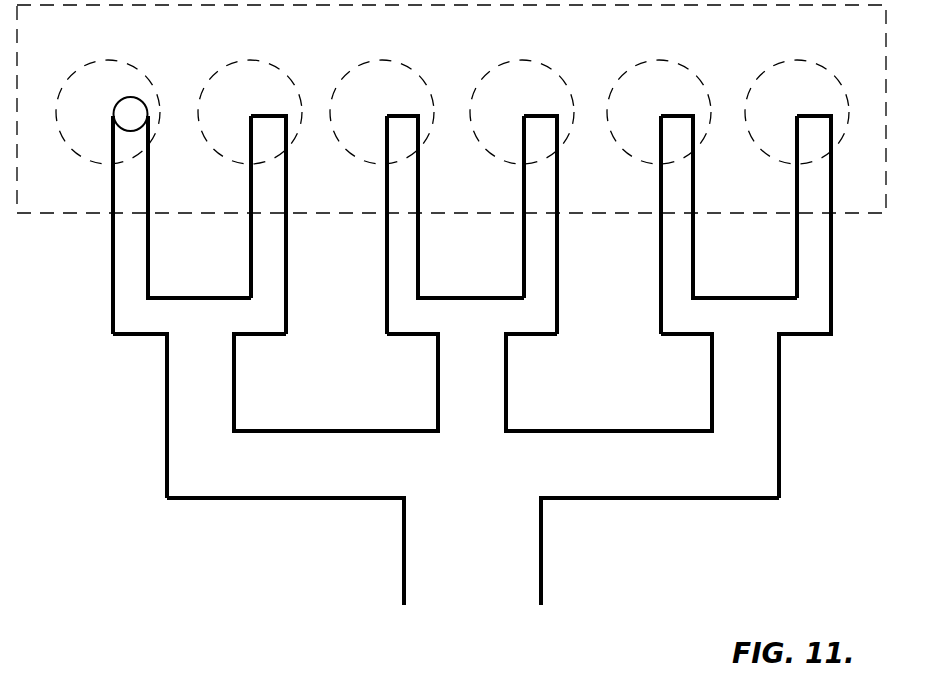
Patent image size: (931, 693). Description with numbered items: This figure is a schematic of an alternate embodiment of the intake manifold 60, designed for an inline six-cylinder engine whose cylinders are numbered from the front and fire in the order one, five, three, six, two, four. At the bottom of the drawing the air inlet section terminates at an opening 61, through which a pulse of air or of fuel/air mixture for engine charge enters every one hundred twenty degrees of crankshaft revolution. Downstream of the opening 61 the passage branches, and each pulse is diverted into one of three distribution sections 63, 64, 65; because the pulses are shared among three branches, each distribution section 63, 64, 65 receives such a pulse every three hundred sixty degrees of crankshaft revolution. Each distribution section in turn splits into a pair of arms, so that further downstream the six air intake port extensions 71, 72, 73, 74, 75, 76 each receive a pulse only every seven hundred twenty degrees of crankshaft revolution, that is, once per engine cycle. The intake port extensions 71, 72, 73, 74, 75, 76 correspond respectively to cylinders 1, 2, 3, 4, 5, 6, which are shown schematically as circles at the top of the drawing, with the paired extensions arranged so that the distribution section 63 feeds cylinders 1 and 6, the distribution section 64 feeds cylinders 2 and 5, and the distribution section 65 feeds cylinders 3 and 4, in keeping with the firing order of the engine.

The cylinder 1 is at (108, 112).
The cylinder 2 is at (382, 112).
The cylinder 3 is at (659, 112).
The cylinder 4 is at (797, 112).
The cylinder 5 is at (522, 112).
The cylinder 6 is at (250, 112).
The manifold 60 is at (453, 371).
The opening 61 is at (450, 605).
The distribution section 63 is at (170, 421).
The distribution section 64 is at (443, 415).
The distribution section 65 is at (719, 412).
The air intake port extension 71 is at (118, 280).
The air intake port extension 72 is at (390, 279).
The air intake port extension 73 is at (667, 275).
The air intake port extension 74 is at (805, 280).
The air intake port extension 75 is at (528, 262).
The air intake port extension 76 is at (253, 278).